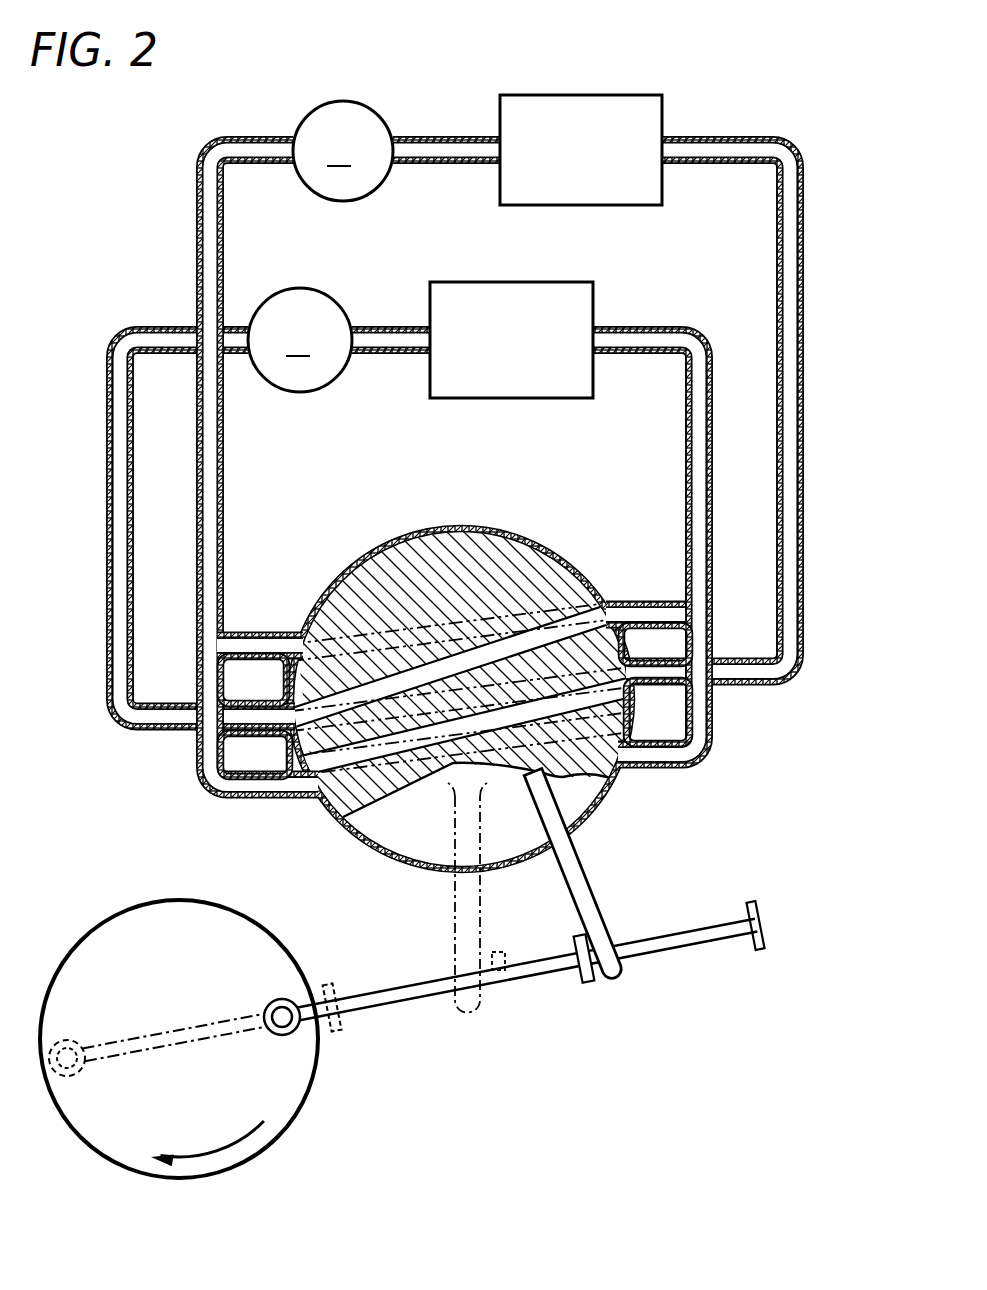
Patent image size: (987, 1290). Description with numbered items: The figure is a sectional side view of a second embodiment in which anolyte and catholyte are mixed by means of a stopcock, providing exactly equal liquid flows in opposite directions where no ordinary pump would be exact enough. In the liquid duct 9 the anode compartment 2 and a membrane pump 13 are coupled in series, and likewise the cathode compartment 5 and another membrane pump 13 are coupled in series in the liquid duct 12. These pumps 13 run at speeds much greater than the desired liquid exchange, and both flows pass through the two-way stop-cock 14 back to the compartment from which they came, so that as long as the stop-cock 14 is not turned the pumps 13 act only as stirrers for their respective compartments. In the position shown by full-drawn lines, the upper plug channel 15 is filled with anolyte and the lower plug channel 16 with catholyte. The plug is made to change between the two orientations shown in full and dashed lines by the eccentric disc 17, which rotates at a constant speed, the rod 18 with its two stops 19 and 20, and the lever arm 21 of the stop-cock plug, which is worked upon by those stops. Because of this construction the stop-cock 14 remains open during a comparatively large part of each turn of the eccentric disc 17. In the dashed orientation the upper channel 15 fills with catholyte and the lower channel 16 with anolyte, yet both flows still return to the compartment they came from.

The anode compartment 2 is at (525, 358).
The cathode compartment 5 is at (592, 163).
The liquid duct 9 is at (408, 340).
The liquid duct 12 is at (467, 148).
The membrane pump 13 is at (318, 192).
The two-way stop-cock 14 is at (378, 565).
The upper plug channel 15 is at (533, 637).
The lower plug channel 16 is at (507, 712).
The eccentric disc 17 is at (183, 979).
The rod 18 is at (676, 946).
The stop 19 is at (502, 970).
The stop 20 is at (587, 992).
The lever arm 21 is at (562, 871).